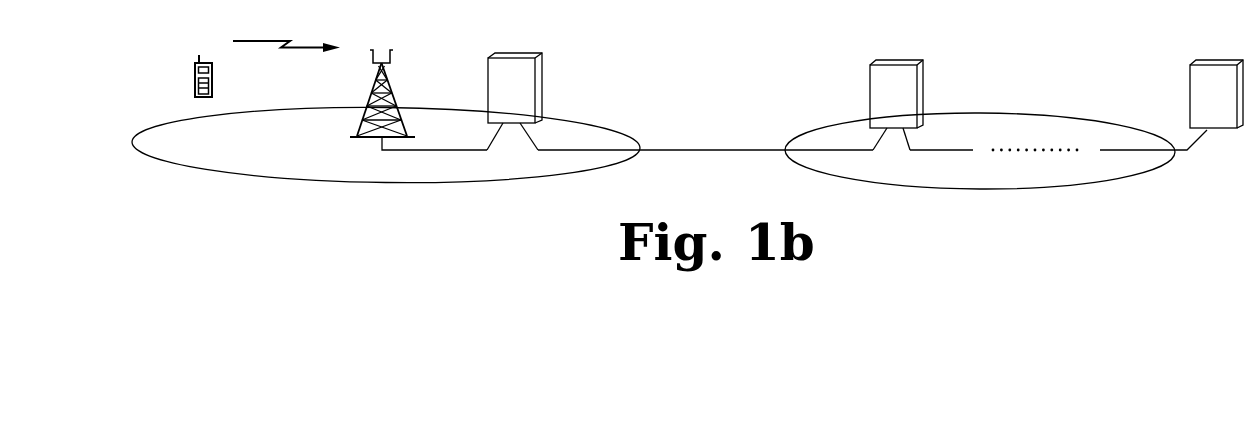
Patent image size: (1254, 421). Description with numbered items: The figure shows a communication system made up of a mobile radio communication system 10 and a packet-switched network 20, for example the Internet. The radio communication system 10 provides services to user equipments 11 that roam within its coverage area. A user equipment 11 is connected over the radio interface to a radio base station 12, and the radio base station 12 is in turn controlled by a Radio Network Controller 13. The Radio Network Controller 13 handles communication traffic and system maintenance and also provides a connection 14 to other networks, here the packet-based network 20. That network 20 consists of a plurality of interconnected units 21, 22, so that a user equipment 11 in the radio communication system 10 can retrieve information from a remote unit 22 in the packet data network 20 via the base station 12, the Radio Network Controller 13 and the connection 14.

The mobile radio communication system 10 is at (238, 188).
The user equipment 11 is at (181, 53).
The radio base station 12 is at (377, 32).
The Radio Network Controller 13 is at (510, 32).
The connection 14 is at (718, 160).
The packet-switched network 20 is at (1137, 193).
The interconnected unit 21 is at (903, 30).
The remote unit 22 is at (1217, 32).